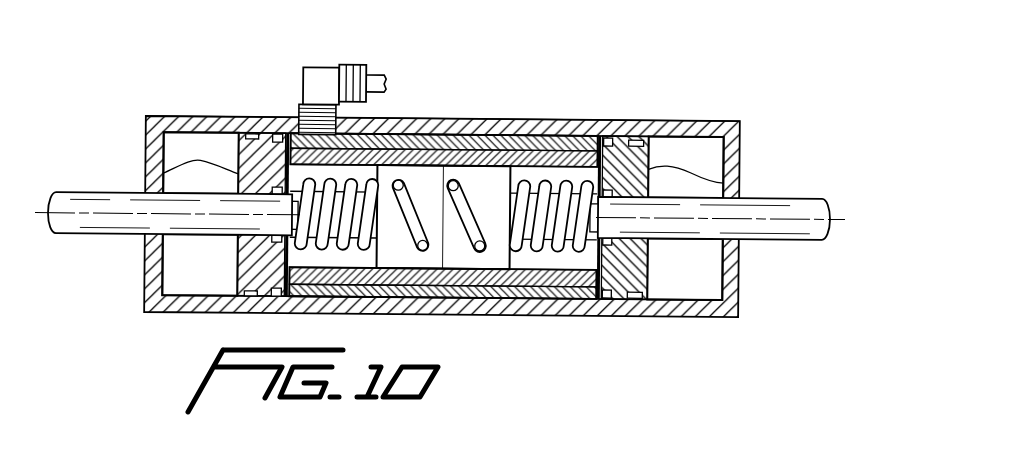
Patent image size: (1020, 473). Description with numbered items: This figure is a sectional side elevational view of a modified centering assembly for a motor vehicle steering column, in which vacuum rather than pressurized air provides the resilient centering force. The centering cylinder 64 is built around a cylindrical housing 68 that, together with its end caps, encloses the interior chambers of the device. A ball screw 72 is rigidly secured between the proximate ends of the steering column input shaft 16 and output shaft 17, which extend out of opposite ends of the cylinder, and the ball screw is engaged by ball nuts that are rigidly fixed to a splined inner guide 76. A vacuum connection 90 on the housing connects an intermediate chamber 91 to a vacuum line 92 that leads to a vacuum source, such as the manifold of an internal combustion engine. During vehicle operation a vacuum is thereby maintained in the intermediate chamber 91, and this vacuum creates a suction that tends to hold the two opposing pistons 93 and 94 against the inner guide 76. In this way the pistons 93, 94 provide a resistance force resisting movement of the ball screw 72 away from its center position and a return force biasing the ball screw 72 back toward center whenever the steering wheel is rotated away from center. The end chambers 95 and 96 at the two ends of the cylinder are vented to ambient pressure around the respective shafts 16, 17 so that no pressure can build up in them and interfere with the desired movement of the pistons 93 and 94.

The input shaft 16 is at (799, 198).
The output shaft 17 is at (98, 237).
The centering cylinder 64 is at (599, 312).
The cylindrical housing 68 is at (634, 118).
The ball screw 72 is at (553, 253).
The splined inner guide 76 is at (540, 166).
The vacuum connection 90 is at (318, 65).
The intermediate chamber 91 is at (365, 170).
The vacuum line 92 is at (371, 72).
The piston 93 is at (728, 178).
The piston 94 is at (163, 174).
The end chamber 95 is at (692, 143).
The end chamber 96 is at (183, 140).